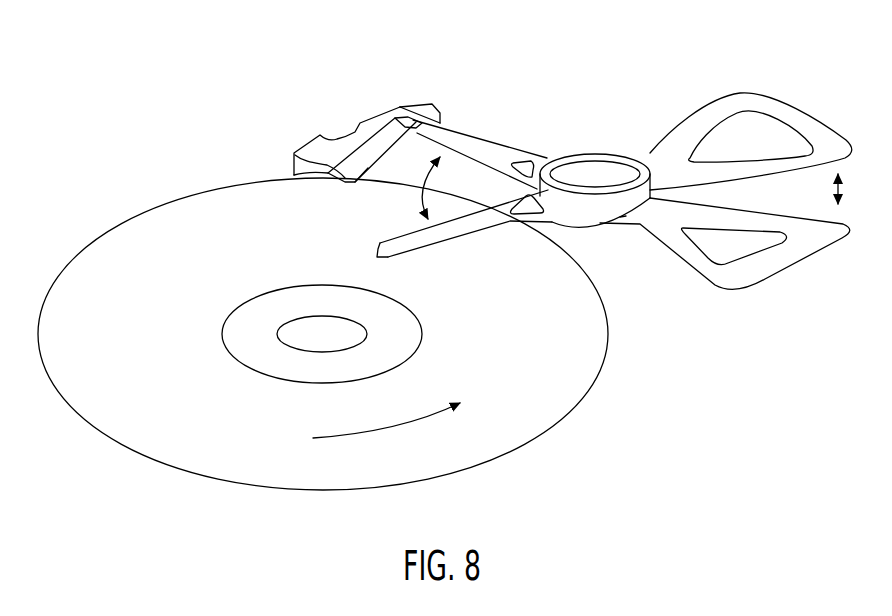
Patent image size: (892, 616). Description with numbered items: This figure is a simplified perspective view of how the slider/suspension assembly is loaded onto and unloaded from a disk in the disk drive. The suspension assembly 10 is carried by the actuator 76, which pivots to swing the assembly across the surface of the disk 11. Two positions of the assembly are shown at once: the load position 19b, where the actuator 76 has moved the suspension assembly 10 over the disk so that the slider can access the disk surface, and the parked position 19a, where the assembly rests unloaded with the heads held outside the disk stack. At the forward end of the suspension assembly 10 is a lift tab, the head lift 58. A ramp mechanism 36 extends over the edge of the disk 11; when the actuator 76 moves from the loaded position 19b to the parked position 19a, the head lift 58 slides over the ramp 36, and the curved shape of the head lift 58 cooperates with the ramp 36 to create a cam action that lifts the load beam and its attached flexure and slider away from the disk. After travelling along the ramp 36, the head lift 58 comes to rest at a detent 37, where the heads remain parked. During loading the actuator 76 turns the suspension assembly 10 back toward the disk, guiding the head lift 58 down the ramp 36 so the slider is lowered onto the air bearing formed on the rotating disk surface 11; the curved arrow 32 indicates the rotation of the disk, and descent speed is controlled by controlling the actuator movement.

The suspension assembly 10 is at (429, 258).
The disk 11 is at (223, 470).
The parked position 19a is at (477, 109).
The load position 19b is at (475, 288).
The disk rotation direction 32 is at (407, 428).
The ramp mechanism 36 is at (345, 167).
The detent 37 is at (405, 116).
The head lift 58 is at (373, 250).
The actuator 76 is at (603, 170).